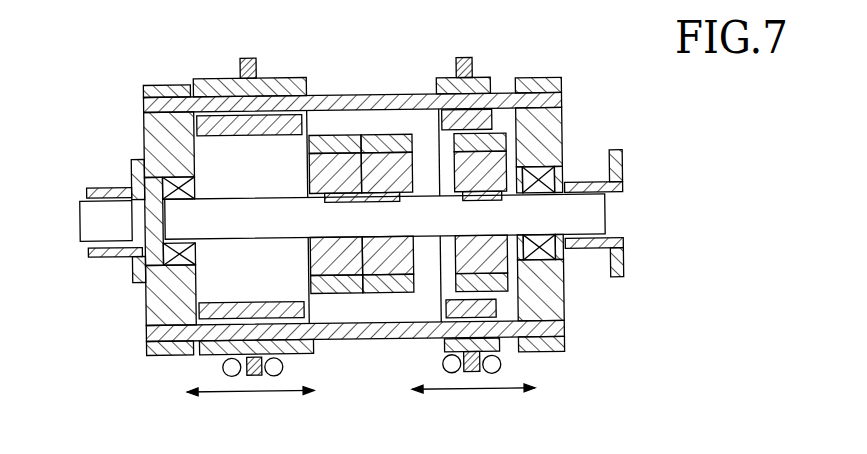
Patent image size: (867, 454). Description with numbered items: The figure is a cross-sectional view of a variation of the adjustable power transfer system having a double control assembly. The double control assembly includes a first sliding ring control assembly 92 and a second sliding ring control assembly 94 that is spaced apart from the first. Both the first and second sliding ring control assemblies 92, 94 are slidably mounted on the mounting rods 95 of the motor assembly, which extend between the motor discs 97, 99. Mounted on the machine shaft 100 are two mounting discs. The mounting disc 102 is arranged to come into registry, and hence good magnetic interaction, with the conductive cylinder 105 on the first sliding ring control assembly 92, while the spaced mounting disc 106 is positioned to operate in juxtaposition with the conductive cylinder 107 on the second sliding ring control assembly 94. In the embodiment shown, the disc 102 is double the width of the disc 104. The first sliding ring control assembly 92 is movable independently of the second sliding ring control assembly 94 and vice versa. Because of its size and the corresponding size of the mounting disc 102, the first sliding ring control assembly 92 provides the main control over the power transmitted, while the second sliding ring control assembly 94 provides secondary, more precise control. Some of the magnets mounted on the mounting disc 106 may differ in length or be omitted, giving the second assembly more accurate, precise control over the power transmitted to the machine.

The first sliding ring control assembly 92 is at (212, 78).
The second sliding ring control assembly 94 is at (490, 97).
The mounting rods 95 is at (345, 95).
The motor disc 97 is at (148, 126).
The motor disc 99 is at (563, 120).
The machine shaft 100 is at (568, 182).
The mounting disc 102 is at (322, 165).
The disc 104 is at (393, 151).
The conductive cylinder 105 is at (278, 122).
The mounting disc 106 is at (457, 261).
The conductive cylinder 107 is at (495, 107).